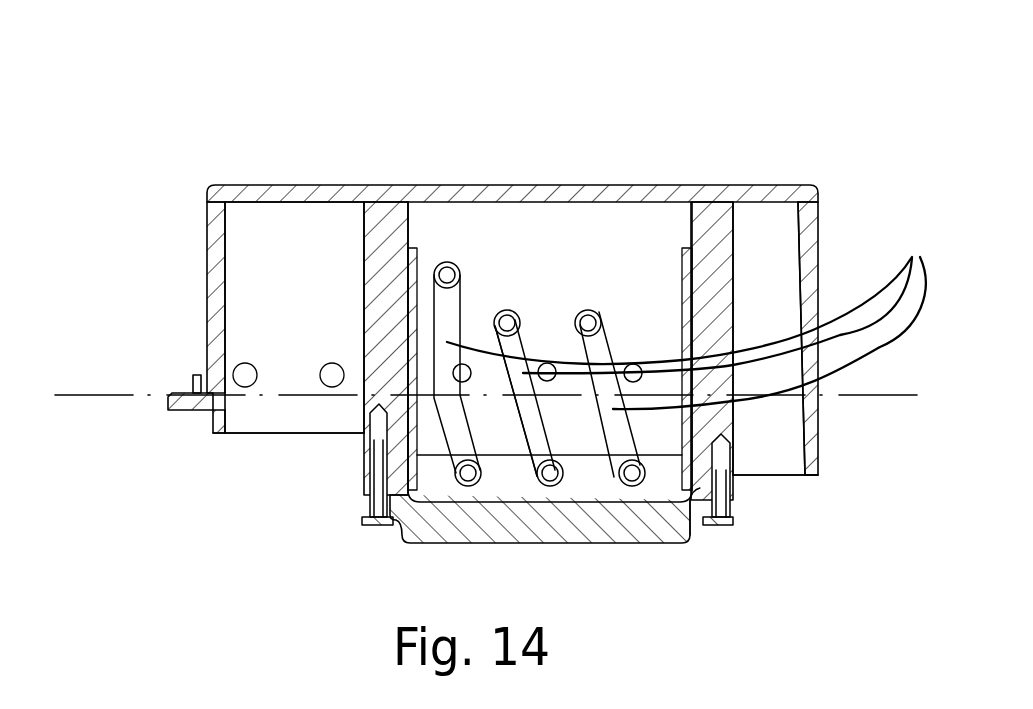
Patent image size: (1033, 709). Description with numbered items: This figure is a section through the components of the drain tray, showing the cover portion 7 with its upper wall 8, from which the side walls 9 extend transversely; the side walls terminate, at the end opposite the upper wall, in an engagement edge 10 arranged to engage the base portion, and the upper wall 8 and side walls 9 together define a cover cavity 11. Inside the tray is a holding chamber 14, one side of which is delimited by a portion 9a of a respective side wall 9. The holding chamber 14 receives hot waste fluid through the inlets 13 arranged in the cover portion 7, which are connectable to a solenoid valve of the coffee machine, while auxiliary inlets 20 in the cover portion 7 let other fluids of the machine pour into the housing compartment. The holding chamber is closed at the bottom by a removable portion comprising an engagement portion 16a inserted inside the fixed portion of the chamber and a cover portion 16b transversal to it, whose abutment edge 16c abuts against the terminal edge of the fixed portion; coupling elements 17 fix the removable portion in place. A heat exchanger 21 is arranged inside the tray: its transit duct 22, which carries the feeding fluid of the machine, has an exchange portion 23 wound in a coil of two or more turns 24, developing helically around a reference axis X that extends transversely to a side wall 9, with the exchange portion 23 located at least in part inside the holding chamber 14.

The cover portion 7 is at (520, 277).
The upper wall 8 is at (628, 195).
The side wall 9 is at (207, 262).
The portion of side wall 9a is at (528, 226).
The engagement edge 10 is at (213, 408).
The cover cavity 11 is at (782, 442).
The inlet 13 is at (464, 374).
The holding chamber 14 is at (677, 222).
The engagement portion 16a is at (690, 303).
The cover portion of removable portion 16b is at (654, 535).
The abutment edge 16c is at (698, 488).
The coupling element 17 is at (364, 478).
The auxiliary inlet 20 is at (333, 375).
The heat exchanger 21 is at (530, 318).
The transit duct 22 is at (455, 264).
The exchange portion 23 is at (689, 319).
The turns 24 is at (516, 312).
The reference axis X is at (75, 396).